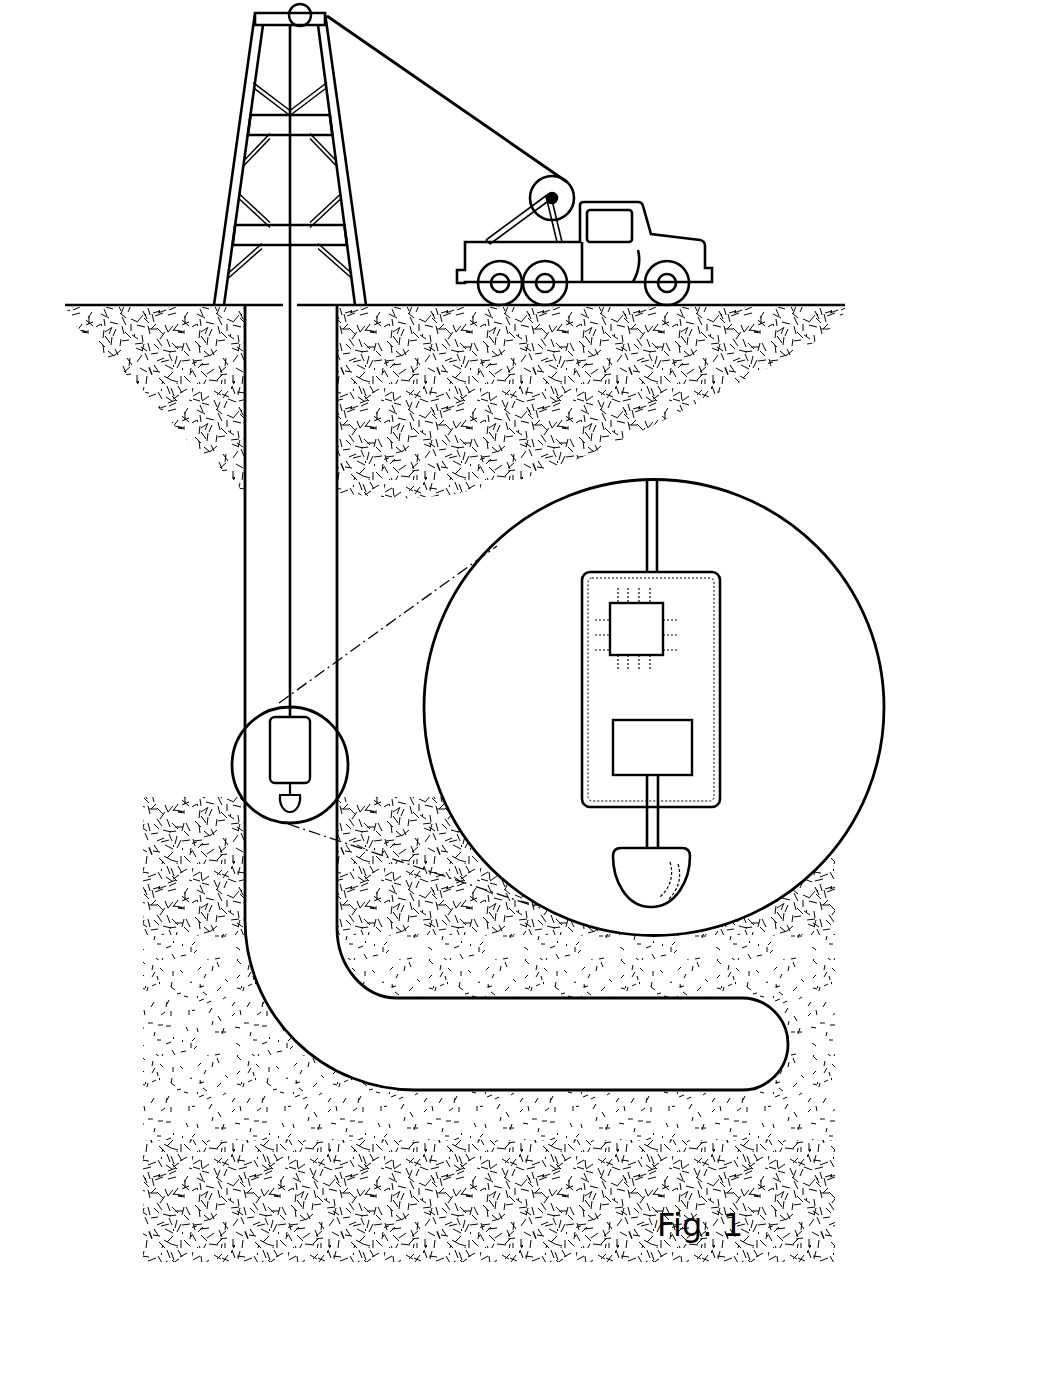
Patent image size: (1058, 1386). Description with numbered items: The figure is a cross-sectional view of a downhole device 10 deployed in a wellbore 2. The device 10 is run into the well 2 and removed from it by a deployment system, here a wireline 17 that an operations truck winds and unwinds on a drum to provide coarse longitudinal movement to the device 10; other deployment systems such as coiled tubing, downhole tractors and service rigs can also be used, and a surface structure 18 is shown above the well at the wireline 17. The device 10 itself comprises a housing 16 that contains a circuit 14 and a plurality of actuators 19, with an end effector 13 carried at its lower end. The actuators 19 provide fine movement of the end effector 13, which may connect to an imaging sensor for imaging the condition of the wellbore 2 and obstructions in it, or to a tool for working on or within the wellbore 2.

The wellbore 2 is at (301, 890).
The downhole device 10 is at (256, 748).
The end effector 13 is at (691, 863).
The circuit 14 is at (656, 645).
The housing 16 is at (718, 720).
The wireline 17 is at (455, 107).
The derrick 18 is at (160, 292).
The actuators 19 is at (671, 761).